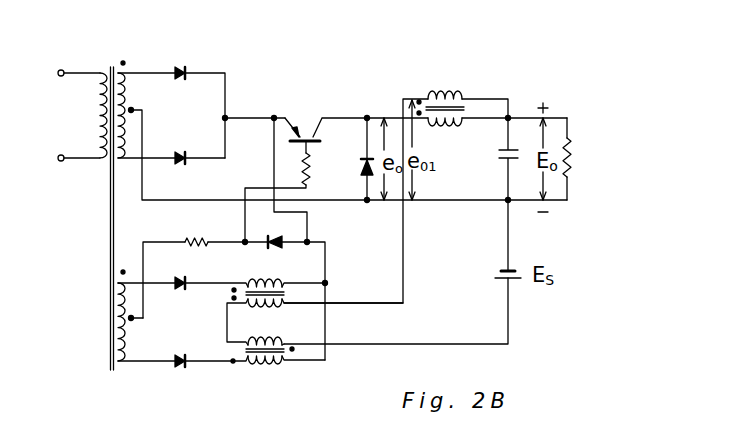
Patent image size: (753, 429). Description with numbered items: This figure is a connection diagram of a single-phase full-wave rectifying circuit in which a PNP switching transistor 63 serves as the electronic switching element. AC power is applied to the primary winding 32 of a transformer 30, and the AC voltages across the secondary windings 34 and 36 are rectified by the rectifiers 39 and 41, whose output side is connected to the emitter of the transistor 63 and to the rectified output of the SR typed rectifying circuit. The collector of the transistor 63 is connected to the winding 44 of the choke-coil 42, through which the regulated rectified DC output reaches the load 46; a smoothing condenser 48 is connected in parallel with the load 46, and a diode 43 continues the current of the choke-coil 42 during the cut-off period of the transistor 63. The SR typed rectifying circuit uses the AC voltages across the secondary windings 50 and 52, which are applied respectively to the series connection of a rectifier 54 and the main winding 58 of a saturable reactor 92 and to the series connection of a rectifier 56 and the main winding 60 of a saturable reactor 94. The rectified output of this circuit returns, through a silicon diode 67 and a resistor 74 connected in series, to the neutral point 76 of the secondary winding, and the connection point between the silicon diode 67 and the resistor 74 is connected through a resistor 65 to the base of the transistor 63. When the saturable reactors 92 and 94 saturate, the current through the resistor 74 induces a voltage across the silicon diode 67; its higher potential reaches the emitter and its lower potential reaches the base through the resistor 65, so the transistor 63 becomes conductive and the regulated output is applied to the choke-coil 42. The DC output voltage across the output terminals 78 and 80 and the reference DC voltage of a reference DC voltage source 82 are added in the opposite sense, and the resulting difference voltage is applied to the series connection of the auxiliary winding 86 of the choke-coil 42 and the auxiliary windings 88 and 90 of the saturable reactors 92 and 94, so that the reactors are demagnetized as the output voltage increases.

The transformer 30 is at (108, 223).
The primary winding 32 is at (97, 113).
The secondary winding 34 is at (131, 92).
The secondary winding 36 is at (131, 142).
The rectifier 39 is at (178, 63).
The rectifier 41 is at (179, 150).
The choke-coil 42 is at (473, 106).
The diode 43 is at (363, 165).
The winding of choke-coil 44 is at (449, 128).
The load 46 is at (572, 160).
The smoothing condenser 48 is at (500, 153).
The secondary winding 50 is at (93, 306).
The secondary winding 52 is at (112, 373).
The rectifier 54 is at (178, 290).
The rectifier 56 is at (178, 368).
The main winding of saturable reactor 58 is at (311, 299).
The main winding of saturable reactor 60 is at (279, 352).
The switching transistor 63 is at (304, 133).
The resistor 65 is at (300, 178).
The silicon diode 67 is at (277, 246).
The resistor 74 is at (194, 238).
The neutral point 76 is at (134, 321).
The output terminal 78 is at (512, 113).
The output terminal 80 is at (506, 203).
The reference DC voltage source 82 is at (498, 274).
The auxiliary winding of choke-coil 86 is at (445, 89).
The auxiliary winding of saturable reactor 88 is at (259, 304).
The auxiliary winding of saturable reactor 90 is at (280, 330).
The saturable reactor 92 is at (284, 298).
The saturable reactor 94 is at (296, 357).